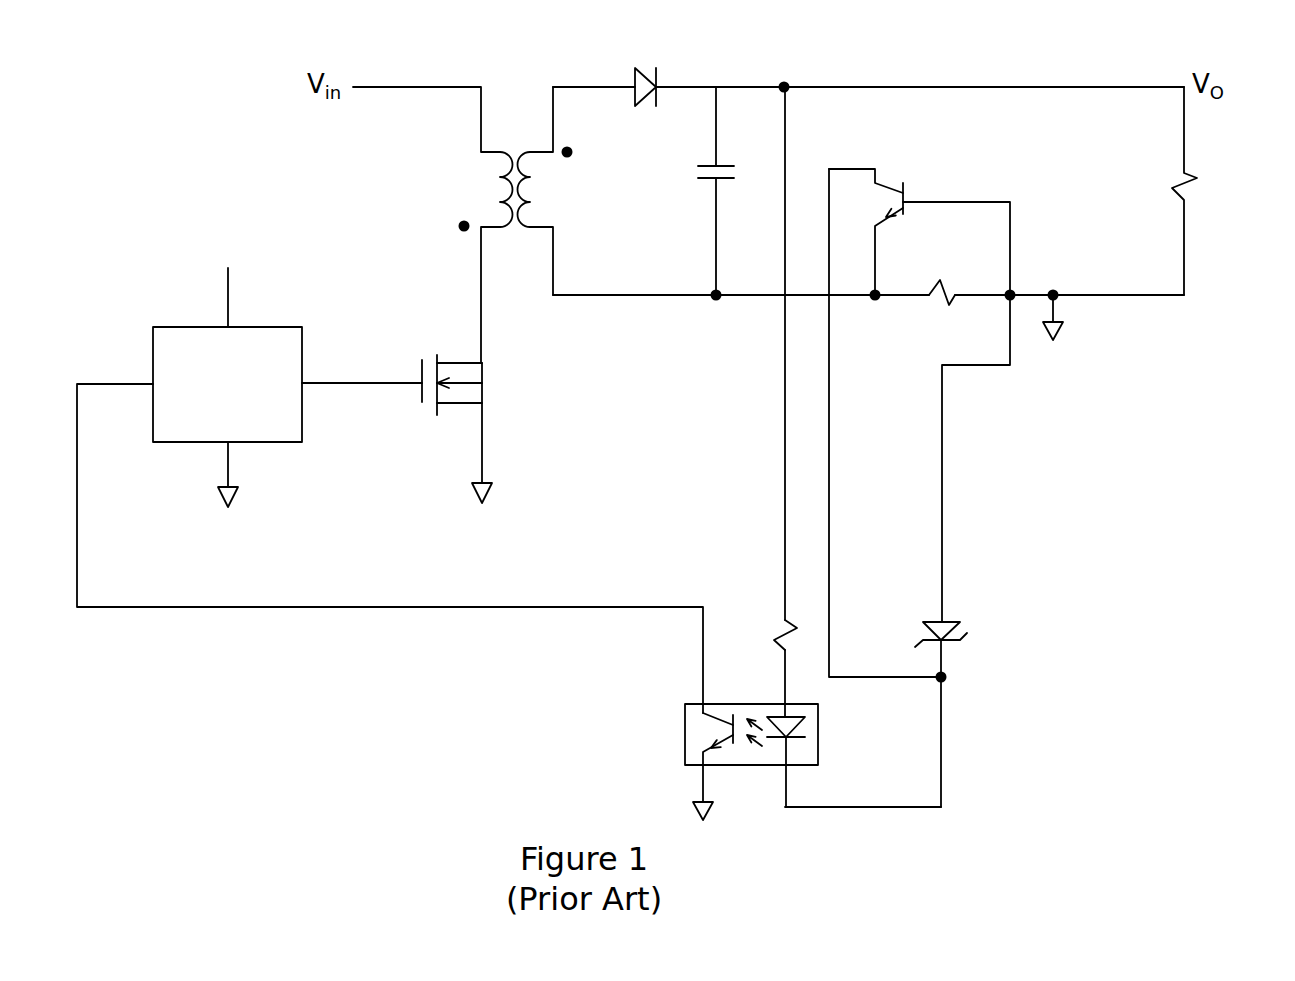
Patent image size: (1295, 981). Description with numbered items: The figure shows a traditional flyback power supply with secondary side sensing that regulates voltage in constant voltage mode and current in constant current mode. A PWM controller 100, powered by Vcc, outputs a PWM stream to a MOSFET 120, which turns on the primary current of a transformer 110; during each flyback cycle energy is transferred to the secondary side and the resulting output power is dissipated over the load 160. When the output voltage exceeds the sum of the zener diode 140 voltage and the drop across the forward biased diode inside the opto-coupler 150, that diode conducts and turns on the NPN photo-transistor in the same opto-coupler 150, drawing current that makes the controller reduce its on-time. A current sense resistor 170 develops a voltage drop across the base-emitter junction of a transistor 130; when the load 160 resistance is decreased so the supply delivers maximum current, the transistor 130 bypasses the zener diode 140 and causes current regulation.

The PWM controller 100 is at (281, 327).
The transformer 110 is at (518, 150).
The MOSFET 120 is at (490, 383).
The transistor 130 is at (903, 187).
The zener diode 140 is at (977, 636).
The opto-coupler 150 is at (820, 740).
The load 160 is at (1194, 191).
The current sense resistor 170 is at (937, 302).